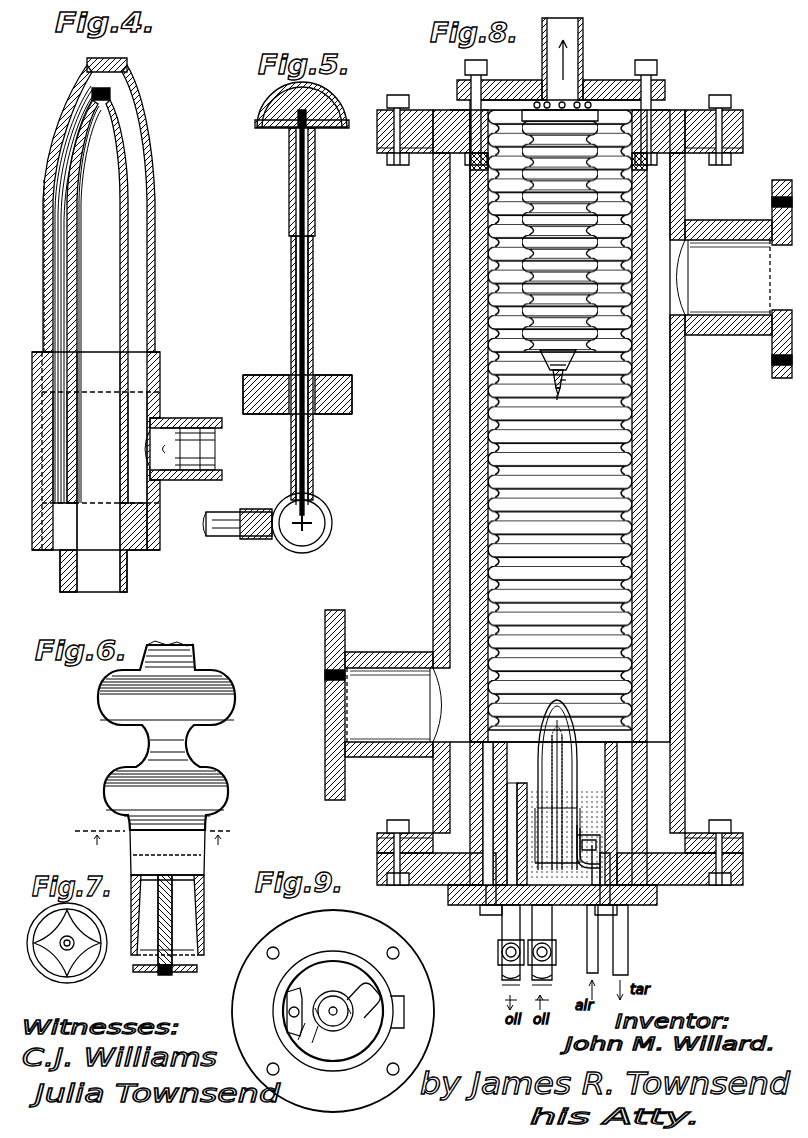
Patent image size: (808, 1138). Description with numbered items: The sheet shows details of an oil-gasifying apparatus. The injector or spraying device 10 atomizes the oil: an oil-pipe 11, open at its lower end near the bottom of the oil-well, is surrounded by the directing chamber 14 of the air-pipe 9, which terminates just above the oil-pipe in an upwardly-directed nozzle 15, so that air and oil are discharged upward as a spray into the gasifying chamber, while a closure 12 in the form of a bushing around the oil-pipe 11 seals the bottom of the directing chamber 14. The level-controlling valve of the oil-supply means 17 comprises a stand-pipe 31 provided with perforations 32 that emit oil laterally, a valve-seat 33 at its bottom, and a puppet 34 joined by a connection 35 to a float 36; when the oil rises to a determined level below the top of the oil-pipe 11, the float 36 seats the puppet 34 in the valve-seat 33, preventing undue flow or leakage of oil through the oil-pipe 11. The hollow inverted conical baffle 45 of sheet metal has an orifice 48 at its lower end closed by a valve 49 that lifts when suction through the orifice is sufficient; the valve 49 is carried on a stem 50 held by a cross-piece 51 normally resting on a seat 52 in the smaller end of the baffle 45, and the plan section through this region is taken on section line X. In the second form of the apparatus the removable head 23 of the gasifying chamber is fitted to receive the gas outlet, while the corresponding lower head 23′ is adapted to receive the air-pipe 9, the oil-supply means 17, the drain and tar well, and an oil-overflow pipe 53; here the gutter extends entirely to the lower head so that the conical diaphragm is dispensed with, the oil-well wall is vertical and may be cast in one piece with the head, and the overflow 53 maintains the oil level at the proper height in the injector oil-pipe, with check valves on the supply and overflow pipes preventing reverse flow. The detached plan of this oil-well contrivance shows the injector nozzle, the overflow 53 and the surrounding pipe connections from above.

In FIG. 4, the air-pipe 9 is at (192, 454).
In FIG. 4, the injector 10 is at (157, 243).
In FIG. 4, the oil-pipe 11 is at (110, 298).
In FIG. 4, the closure 12 is at (135, 555).
In FIG. 4, the directing chamber 14 is at (157, 285).
In FIG. 4, the nozzle 15 is at (90, 73).
In FIG. 5, the oil-supply means 17 is at (253, 552).
In FIG. 8, the removable head 23 is at (508, 80).
In FIG. 5, the head 23′ is at (243, 395).
In FIG. 5, the stand-pipe 31 is at (314, 275).
In FIG. 5, the perforations 32 is at (290, 175).
In FIG. 5, the valve-seat 33 is at (320, 510).
In FIG. 5, the puppet 34 is at (310, 528).
In FIG. 5, the connection 35 is at (298, 345).
In FIG. 5, the float 36 is at (268, 108).
In FIG. 6, the baffle 45 is at (108, 706).
In FIG. 6, the orifice 48 is at (185, 946).
In FIG. 6, the valve 49 is at (148, 973).
In FIG. 6, the stem 50 is at (173, 925).
In FIG. 6, the cross-piece 51 is at (135, 878).
In FIG. 7, the cross-piece 51 is at (55, 968).
In FIG. 6, the seat 52 is at (205, 900).
In FIG. 7, the seat 52 is at (80, 970).
In FIG. 8, the oil-overflow pipe 53 is at (510, 790).
In FIG. 9, the oil-overflow pipe 53 is at (287, 1001).
In FIG. 6, the section line X is at (151, 833).